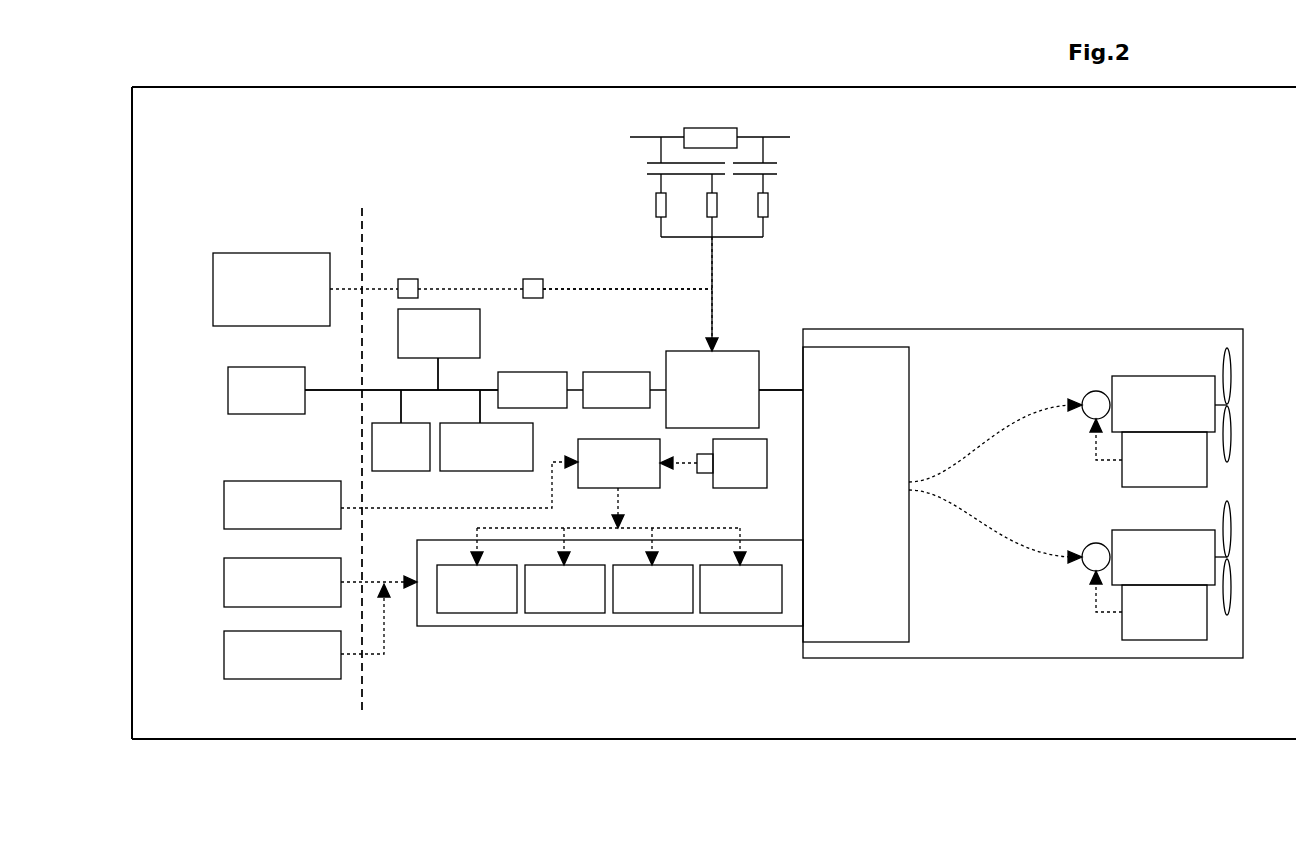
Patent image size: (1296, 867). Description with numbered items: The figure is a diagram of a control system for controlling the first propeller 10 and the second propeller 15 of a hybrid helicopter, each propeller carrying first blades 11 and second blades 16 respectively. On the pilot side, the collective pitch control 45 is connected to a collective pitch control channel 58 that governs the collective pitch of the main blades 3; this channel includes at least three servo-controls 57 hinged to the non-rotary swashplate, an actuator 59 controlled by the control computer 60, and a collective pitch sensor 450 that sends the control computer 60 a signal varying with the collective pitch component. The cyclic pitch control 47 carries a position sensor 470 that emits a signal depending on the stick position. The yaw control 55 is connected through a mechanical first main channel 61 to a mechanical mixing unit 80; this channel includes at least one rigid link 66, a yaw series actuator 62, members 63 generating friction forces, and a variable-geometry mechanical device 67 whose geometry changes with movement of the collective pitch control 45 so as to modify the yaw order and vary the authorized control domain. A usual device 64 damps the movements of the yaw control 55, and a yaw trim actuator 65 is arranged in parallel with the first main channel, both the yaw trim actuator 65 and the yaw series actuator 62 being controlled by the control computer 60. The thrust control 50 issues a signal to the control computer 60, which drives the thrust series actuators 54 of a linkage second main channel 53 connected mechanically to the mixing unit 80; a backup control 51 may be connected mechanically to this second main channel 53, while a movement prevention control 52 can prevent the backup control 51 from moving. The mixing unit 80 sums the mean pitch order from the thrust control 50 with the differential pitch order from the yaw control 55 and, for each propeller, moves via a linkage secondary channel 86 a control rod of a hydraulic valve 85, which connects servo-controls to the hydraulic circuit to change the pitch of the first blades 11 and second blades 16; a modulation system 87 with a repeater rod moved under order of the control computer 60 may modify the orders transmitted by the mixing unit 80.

The main blades 3 is at (790, 137).
The first propeller 10 is at (1192, 376).
The first blades 11 is at (1232, 367).
The second propeller 15 is at (1140, 530).
The second blades 16 is at (1232, 586).
The collective pitch control 45 is at (213, 305).
The cyclic pitch control 47 is at (740, 463).
The thrust control 50 is at (224, 511).
The backup control 51 is at (224, 592).
The movement prevention control 52 is at (224, 674).
The linkage second main channel 53 is at (590, 630).
The thrust series actuator 54 is at (465, 613).
The yaw control 55 is at (228, 398).
The servo-controls 57 is at (666, 205).
The collective pitch control channel 58 is at (592, 289).
The actuator 59 is at (533, 279).
The control computer 60 is at (619, 463).
The mechanical first main channel 61 is at (348, 398).
The yaw series actuator 62 is at (540, 372).
The members generating friction forces 63 is at (456, 471).
The device 64 is at (458, 309).
The yaw trim actuator 65 is at (410, 471).
The rigid link 66 is at (388, 390).
The variable-geometry mechanical device 67 is at (712, 389).
The mixing unit 80 is at (1023, 493).
The hydraulic valve 85 is at (1096, 390).
The linkage secondary channel 86 is at (1016, 420).
The modulation system 87 is at (1207, 470).
The collective pitch sensor 450 is at (410, 279).
The position sensor 470 is at (700, 473).